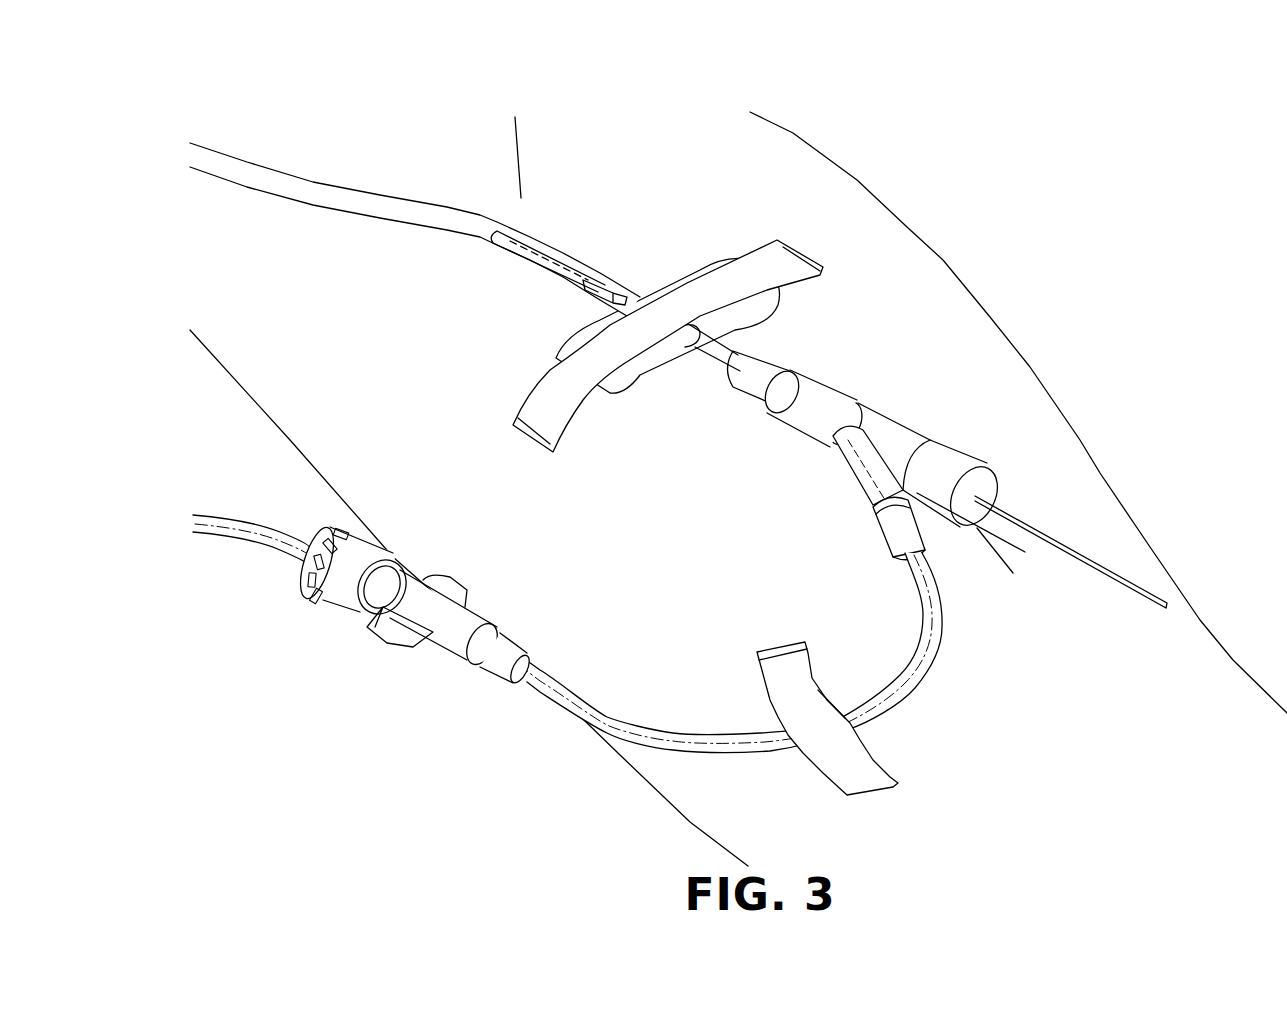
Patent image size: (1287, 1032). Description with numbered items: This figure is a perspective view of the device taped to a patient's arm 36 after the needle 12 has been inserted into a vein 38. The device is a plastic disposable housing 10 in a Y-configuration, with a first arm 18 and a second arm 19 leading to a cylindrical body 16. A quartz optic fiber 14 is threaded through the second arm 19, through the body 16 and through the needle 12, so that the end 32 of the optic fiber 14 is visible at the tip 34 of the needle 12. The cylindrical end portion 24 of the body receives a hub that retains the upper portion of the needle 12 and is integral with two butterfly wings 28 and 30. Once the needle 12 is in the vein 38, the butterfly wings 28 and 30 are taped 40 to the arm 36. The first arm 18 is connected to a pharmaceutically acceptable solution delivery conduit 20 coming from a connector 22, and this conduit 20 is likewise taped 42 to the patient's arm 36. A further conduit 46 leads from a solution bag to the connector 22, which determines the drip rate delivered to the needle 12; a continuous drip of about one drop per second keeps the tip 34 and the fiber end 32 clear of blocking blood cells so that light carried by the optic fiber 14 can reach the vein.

The housing 10 is at (908, 398).
The needle 12 is at (598, 282).
The quartz optic fiber 14 is at (1063, 547).
The cylindrical body 16 is at (820, 380).
The first arm 18 is at (850, 487).
The second arm 19 is at (967, 455).
The pharmaceutically acceptable solution delivery conduit 20 is at (608, 732).
The connector 22 is at (360, 621).
The cylindrical end portion 24 is at (713, 367).
The butterfly wing 28 is at (777, 303).
The butterfly wing 30 is at (613, 393).
The end of optic fiber 32 is at (487, 243).
The tip of needle 34 is at (528, 245).
The arm of patient 36 is at (1175, 685).
The vein 38 is at (303, 203).
The tape 40 is at (793, 245).
The tape 42 is at (887, 790).
The conduit 46 is at (227, 538).